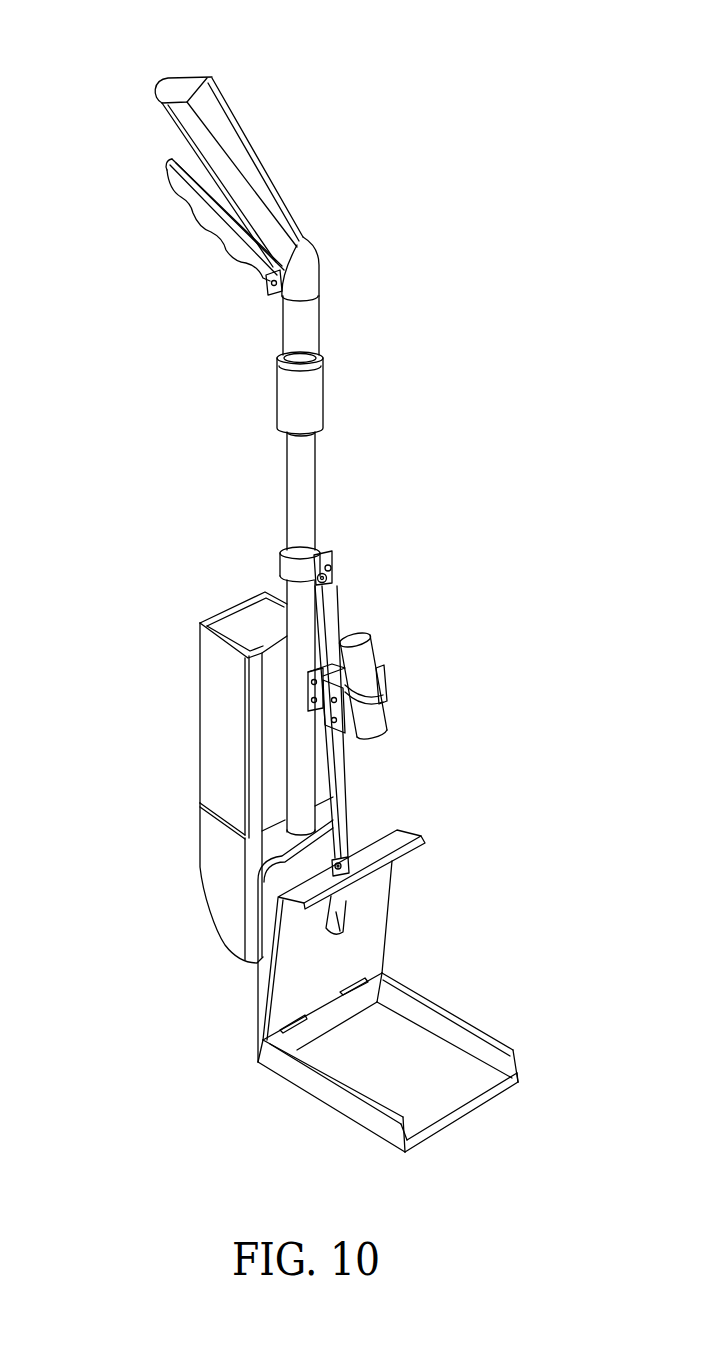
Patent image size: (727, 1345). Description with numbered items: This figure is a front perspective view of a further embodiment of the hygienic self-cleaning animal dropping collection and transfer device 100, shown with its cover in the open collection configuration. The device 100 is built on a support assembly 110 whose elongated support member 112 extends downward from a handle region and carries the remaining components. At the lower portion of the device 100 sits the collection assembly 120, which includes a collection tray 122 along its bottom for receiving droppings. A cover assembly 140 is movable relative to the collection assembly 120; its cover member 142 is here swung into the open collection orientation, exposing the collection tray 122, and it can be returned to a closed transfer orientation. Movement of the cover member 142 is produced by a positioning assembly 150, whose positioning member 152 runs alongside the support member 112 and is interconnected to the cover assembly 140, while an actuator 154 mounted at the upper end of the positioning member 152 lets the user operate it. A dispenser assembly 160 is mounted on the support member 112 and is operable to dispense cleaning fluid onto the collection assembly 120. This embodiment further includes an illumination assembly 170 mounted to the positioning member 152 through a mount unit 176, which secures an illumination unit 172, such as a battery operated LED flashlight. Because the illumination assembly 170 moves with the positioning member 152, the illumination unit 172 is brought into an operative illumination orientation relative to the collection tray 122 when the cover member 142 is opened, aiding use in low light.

The hygienic self-cleaning animal dropping collection and transfer device 100 is at (546, 90).
The support assembly 110 is at (360, 248).
The support member 112 is at (287, 494).
The collection assembly 120 is at (279, 1118).
The collection tray 122 is at (464, 1090).
The cover assembly 140 is at (444, 894).
The cover member 142 is at (373, 888).
The positioning assembly 150 is at (396, 490).
The positioning member 152 is at (338, 603).
The actuator 154 is at (330, 548).
The dispenser assembly 160 is at (146, 742).
The illumination assembly 170 is at (402, 721).
The illumination unit 172 is at (369, 648).
The mount unit 176 is at (387, 692).